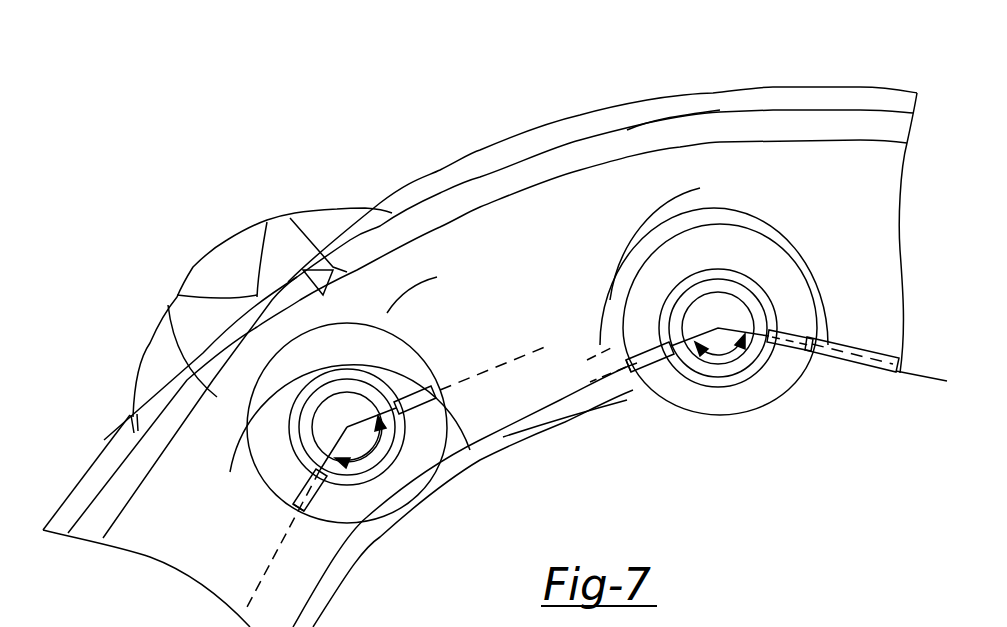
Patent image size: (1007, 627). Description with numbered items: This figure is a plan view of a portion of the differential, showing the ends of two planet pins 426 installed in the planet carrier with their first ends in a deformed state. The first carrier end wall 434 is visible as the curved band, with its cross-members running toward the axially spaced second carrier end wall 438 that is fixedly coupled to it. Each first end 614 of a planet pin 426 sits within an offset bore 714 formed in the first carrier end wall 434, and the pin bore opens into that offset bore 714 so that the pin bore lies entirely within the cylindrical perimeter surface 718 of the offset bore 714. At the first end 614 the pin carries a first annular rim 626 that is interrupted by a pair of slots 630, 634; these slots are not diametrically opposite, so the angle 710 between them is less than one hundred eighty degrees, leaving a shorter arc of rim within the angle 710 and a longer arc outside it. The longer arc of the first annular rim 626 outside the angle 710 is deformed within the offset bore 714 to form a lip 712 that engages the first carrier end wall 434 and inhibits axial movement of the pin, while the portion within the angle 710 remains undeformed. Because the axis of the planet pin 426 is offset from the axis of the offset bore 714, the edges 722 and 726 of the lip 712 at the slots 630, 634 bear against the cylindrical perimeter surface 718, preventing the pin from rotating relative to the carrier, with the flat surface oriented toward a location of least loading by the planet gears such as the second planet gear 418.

The second planet gear 418 is at (272, 248).
The planet pin 426 is at (275, 444).
The first carrier end wall 434 is at (857, 180).
The second carrier end wall 438 is at (763, 107).
The first end 614 is at (254, 381).
The first annular rim 626 is at (118, 0).
The slot 630 is at (410, 372).
The slot 634 is at (243, 0).
The angle 710 is at (373, 437).
The lip 712 is at (254, 421).
The offset bore 714 is at (350, 317).
The cylindrical perimeter surface 718 is at (631, 230).
The edge 722 is at (450, 390).
The edge 726 is at (297, 508).